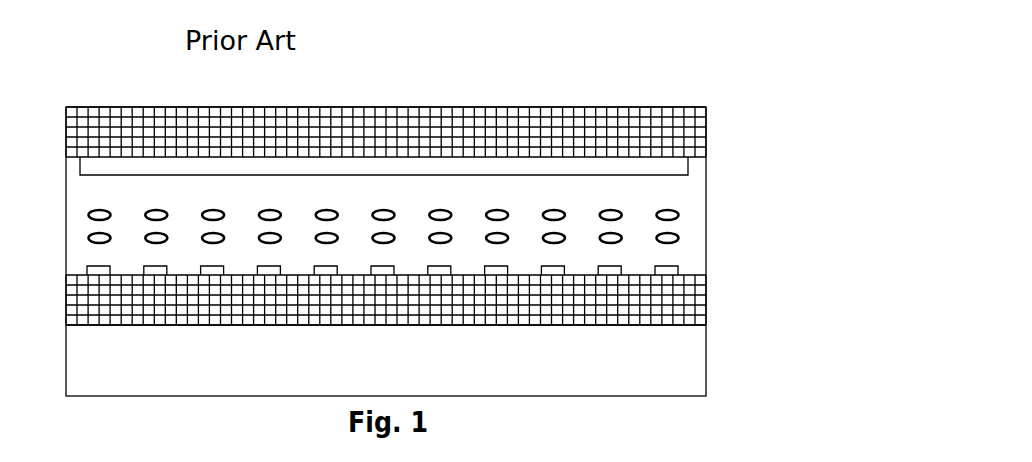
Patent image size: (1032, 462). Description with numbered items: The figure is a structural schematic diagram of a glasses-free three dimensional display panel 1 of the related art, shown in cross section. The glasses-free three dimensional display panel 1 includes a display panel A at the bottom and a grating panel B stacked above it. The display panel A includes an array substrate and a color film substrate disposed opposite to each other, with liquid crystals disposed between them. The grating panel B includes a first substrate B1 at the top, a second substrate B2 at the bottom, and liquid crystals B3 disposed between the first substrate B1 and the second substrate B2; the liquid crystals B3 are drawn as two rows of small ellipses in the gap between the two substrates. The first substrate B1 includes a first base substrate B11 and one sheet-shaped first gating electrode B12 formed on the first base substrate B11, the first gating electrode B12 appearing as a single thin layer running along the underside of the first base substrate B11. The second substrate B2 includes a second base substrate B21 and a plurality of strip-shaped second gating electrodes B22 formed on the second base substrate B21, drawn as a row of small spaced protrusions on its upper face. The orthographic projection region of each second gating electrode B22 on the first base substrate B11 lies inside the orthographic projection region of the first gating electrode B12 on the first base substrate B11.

The glasses-free three dimensional display panel 1 is at (397, 89).
The display panel A is at (708, 352).
The grating panel B is at (855, 147).
The first substrate B1 is at (805, 137).
The first base substrate B11 is at (709, 129).
The first gating electrode B12 is at (691, 167).
The second substrate B2 is at (805, 272).
The second base substrate B21 is at (709, 302).
The second gating electrodes B22 is at (686, 269).
The liquid crystals B3 is at (686, 215).